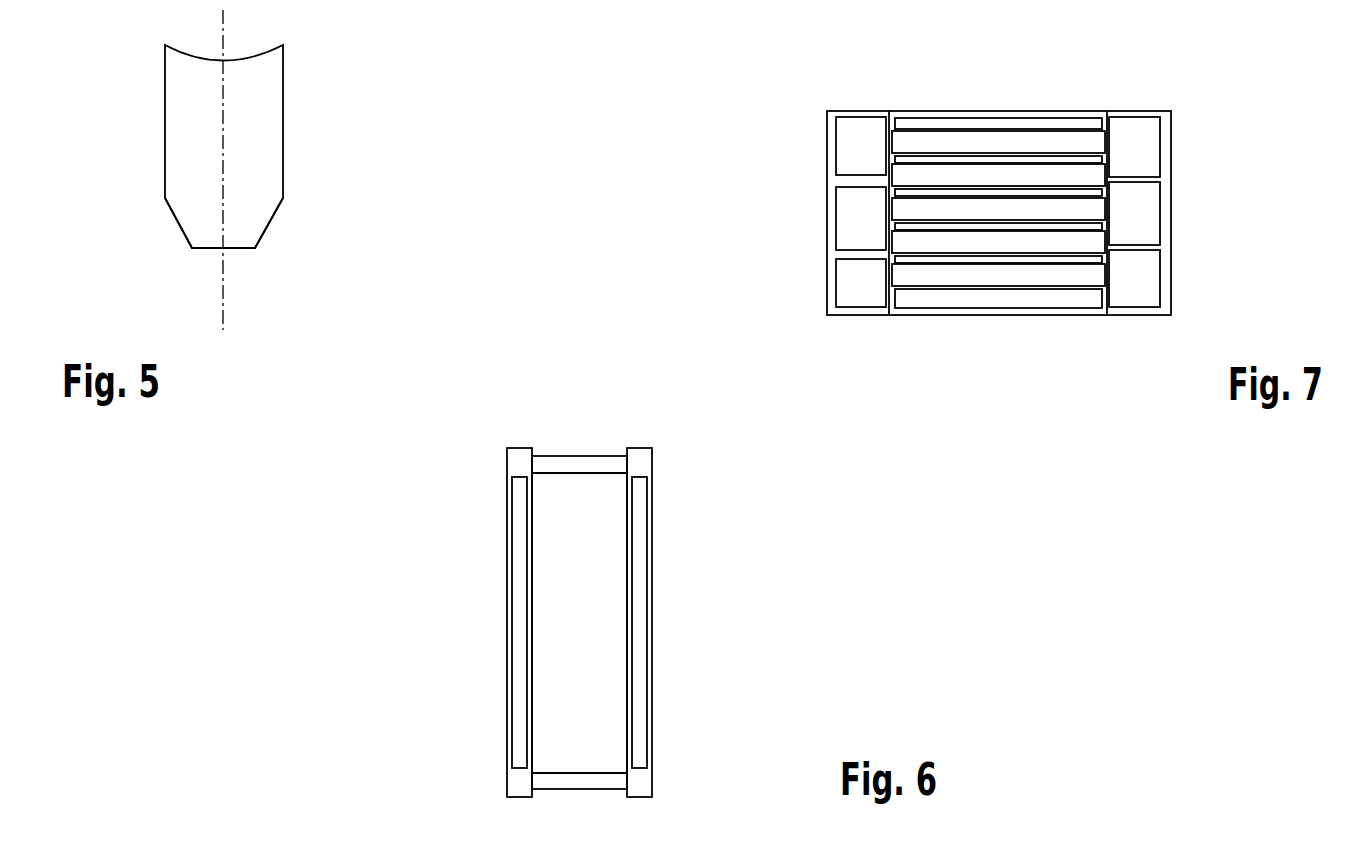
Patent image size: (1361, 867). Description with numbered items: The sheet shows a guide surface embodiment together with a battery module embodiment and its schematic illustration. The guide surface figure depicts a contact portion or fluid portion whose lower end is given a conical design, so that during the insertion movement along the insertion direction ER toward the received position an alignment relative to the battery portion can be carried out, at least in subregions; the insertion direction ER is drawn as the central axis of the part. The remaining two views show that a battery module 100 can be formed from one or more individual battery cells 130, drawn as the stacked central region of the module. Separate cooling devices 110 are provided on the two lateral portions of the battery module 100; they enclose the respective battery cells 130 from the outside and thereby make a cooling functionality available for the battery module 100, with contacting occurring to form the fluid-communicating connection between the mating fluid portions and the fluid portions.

In FIG. 5, the insertion direction ER is at (225, 290).
In FIG. 7, the battery module 100 is at (1216, 225).
In FIG. 6, the battery module 100 is at (682, 651).
In FIG. 7, the end plates / side frames 110 is at (842, 112).
In FIG. 6, the end plates / side frames 110 is at (518, 572).
In FIG. 7, the battery cells 130 is at (993, 173).
In FIG. 6, the battery cells 130 is at (573, 512).